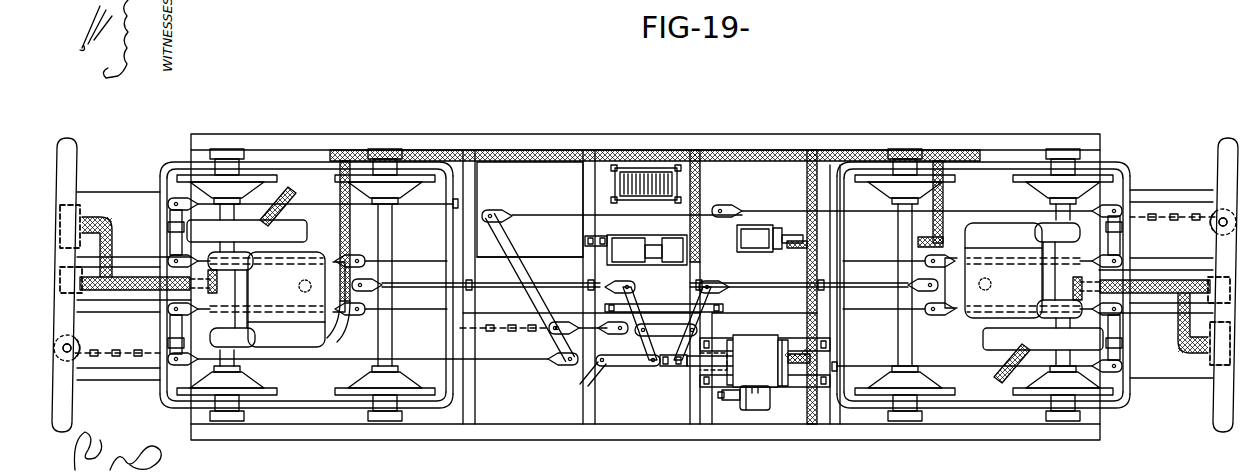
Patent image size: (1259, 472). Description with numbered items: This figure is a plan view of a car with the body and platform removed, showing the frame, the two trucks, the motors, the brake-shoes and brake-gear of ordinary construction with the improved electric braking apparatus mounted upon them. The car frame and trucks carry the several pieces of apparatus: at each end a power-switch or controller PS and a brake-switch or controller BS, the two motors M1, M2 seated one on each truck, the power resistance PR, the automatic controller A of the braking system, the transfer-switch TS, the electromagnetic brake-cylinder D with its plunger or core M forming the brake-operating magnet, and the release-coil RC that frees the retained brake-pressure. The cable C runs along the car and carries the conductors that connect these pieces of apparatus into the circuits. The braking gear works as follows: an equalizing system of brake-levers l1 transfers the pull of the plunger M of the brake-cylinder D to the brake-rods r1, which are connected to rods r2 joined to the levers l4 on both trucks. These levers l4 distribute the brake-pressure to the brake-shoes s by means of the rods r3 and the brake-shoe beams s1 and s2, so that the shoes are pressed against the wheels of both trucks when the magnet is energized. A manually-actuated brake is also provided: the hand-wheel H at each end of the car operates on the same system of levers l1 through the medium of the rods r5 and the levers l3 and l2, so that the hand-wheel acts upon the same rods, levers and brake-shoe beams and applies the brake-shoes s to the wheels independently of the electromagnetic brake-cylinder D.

The power-switch or controller PS is at (84, 210).
The brake-switch or controller BS is at (77, 301).
The hand-wheel H is at (82, 340).
The brake-shoes s is at (445, 172).
The brake-shoe beam s1 is at (160, 383).
The brake-shoe beam s2 is at (457, 380).
The motor M1 is at (266, 283).
The motor M2 is at (1024, 286).
The brake-rods r1 is at (645, 279).
The rods r2 is at (347, 256).
The rods r3 is at (415, 207).
The rods r5 is at (532, 361).
The equalizing system of brake-levers l1 is at (700, 302).
The lever l2 is at (610, 370).
The lever l3 is at (507, 243).
The levers l4 is at (173, 235).
The cable C is at (520, 168).
The automatic controller A is at (603, 238).
The power resistance PR is at (646, 192).
The transfer-switch TS is at (753, 228).
The plunger or core of brake-operating magnet M is at (715, 352).
The electromagnetic brake-cylinder D is at (760, 338).
The release-coil RC is at (771, 396).